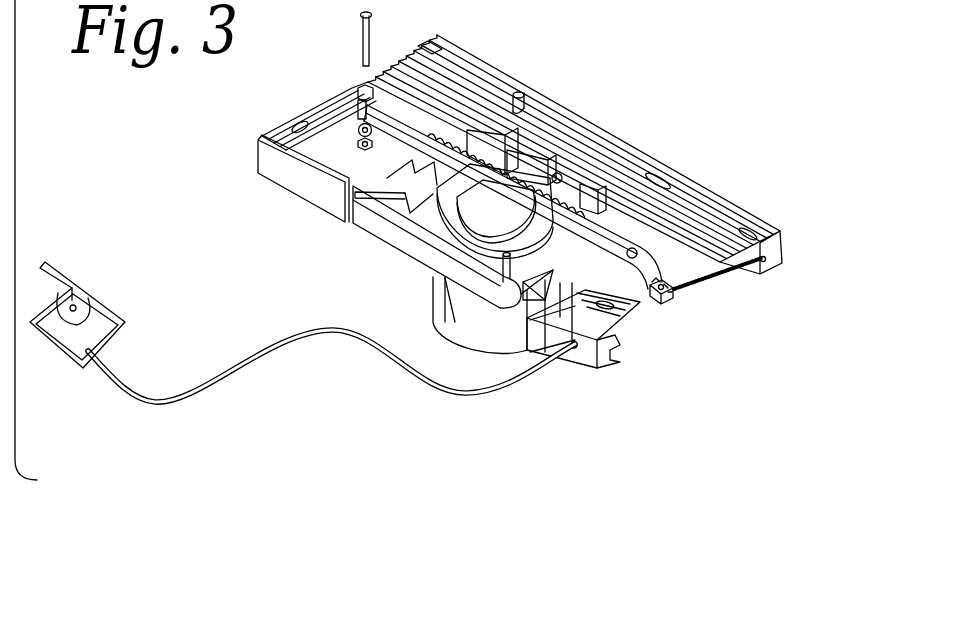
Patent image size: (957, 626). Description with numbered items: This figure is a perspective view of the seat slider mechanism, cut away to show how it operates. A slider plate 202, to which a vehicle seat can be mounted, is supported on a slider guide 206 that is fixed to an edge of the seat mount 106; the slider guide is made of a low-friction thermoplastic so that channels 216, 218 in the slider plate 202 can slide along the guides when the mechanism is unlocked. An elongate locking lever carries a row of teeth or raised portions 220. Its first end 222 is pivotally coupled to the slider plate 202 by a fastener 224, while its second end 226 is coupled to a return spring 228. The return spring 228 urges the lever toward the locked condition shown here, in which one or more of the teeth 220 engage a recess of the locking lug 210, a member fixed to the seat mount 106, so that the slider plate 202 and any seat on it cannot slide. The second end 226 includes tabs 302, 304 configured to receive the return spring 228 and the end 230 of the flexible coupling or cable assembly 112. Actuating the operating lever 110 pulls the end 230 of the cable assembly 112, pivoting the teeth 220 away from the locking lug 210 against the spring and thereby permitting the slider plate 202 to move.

The seat mount 106 is at (657, 283).
The operating lever 110 is at (105, 286).
The flexible coupling or cable assembly 112 is at (333, 332).
The slider plate 202 is at (463, 49).
The slider guide 206 is at (378, 242).
The locking lug 210 is at (535, 165).
The channel 216 is at (610, 360).
The channel 218 is at (781, 272).
The teeth or raised portions 220 is at (482, 157).
The first end 222 is at (352, 100).
The fastener 224 is at (356, 15).
The second end 226 is at (683, 293).
The return spring 228 is at (727, 276).
The end of the cable assembly 230 is at (643, 302).
The tab 302 is at (668, 290).
The tab 304 is at (663, 287).